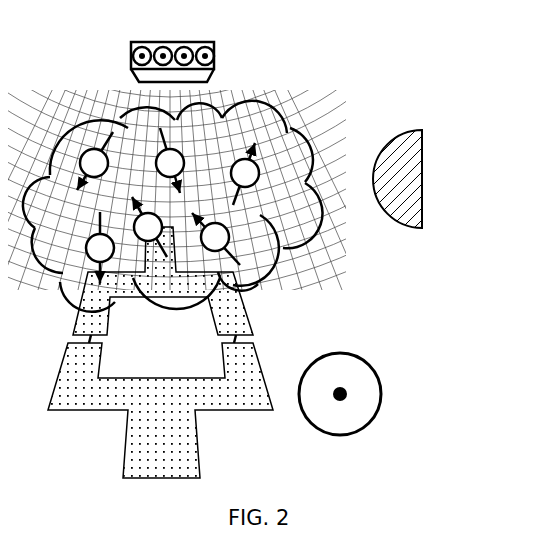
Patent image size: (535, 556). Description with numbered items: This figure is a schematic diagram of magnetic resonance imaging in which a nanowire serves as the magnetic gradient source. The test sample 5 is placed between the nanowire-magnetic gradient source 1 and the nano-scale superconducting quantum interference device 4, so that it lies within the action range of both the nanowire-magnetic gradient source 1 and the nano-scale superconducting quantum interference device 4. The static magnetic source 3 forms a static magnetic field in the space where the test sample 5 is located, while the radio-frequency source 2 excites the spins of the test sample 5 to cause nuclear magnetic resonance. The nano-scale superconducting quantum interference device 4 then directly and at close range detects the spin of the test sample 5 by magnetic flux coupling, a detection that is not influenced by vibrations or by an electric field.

The nanowire-magnetic gradient source 1 is at (216, 60).
The radio-frequency source 2 is at (422, 185).
The static magnetic source 3 is at (375, 395).
The nano-scale superconducting quantum interference device 4 is at (255, 348).
The test sample 5 is at (252, 285).